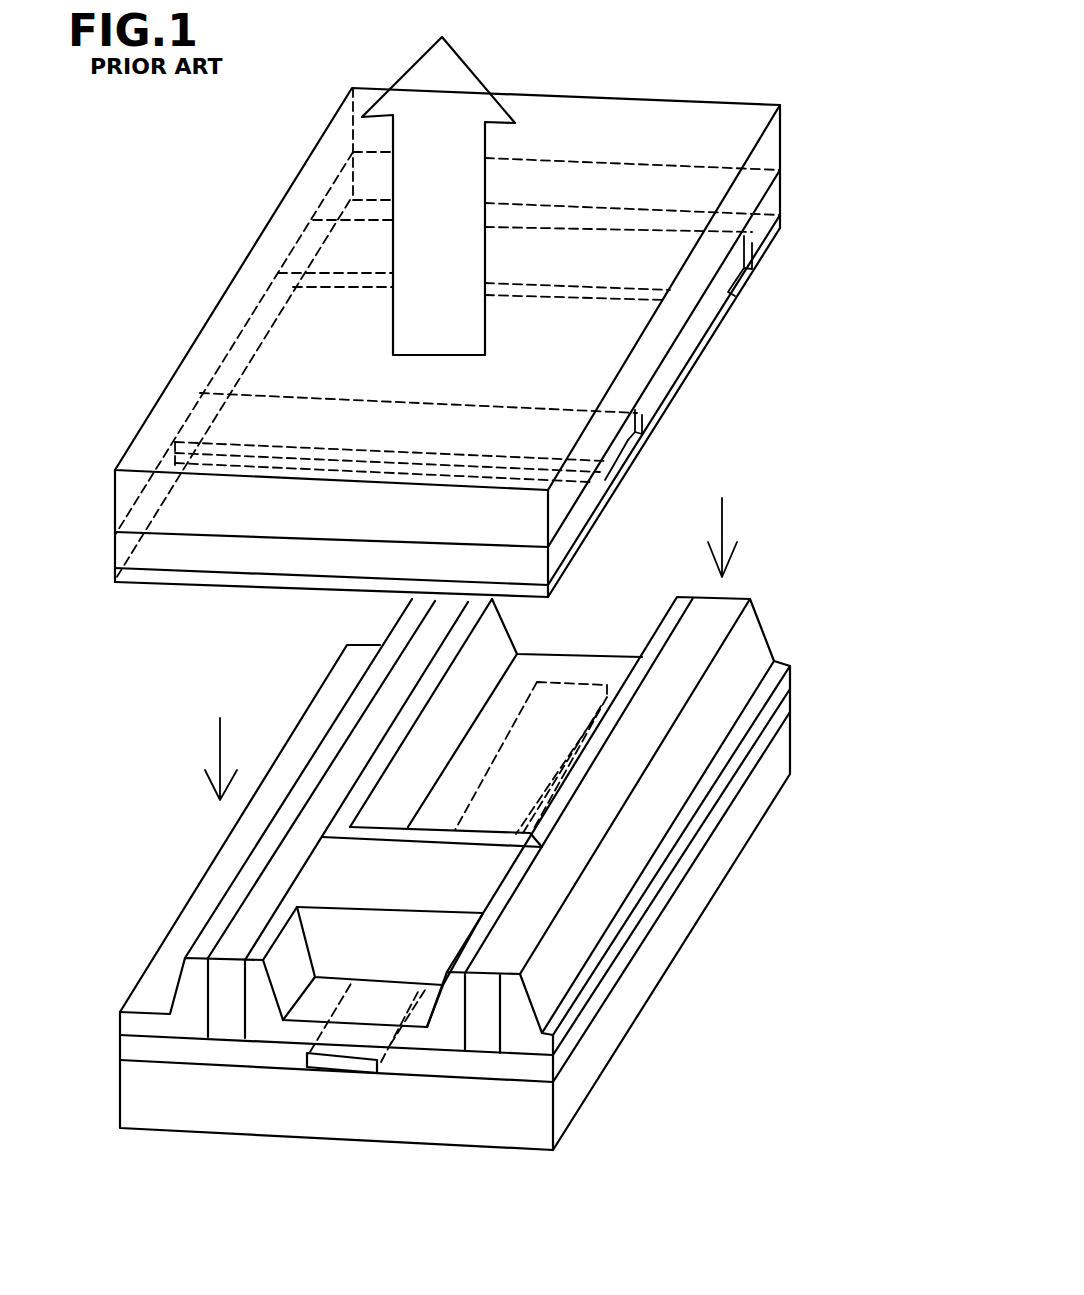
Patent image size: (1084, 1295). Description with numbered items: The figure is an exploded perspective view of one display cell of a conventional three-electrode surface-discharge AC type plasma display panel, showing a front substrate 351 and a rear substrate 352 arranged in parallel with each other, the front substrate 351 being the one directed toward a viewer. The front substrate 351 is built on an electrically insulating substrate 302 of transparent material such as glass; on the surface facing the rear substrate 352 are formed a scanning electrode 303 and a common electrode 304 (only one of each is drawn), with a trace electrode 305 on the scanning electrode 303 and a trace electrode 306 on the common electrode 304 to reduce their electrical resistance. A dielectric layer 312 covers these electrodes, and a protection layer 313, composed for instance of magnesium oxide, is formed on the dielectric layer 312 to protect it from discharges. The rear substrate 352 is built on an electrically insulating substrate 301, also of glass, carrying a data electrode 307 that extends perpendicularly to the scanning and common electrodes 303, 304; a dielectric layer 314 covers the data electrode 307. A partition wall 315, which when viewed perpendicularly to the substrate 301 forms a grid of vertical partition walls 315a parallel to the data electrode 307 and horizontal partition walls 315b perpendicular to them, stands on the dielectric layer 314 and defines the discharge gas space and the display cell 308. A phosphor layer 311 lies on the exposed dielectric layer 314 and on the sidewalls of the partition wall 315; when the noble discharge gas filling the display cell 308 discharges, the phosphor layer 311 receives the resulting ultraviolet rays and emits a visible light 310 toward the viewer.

The electrically insulating substrate 301 is at (500, 926).
The electrically insulating substrate 302 is at (770, 143).
The scanning electrode 303 is at (705, 284).
The common electrode 304 is at (630, 424).
The trace electrode 305 is at (746, 260).
The trace electrode 306 is at (605, 476).
The data electrode 307 is at (350, 1060).
The display cell 308 is at (510, 686).
The visible light 310 is at (455, 78).
The phosphor layer 311 is at (663, 625).
The dielectric layer 312 is at (773, 206).
The protection layer 313 is at (160, 582).
The dielectric layer 314 is at (215, 1048).
The partition wall 315 is at (694, 761).
The vertical partition wall 315a is at (745, 602).
The horizontal partition wall 315b is at (447, 862).
The front substrate 351 is at (525, 335).
The rear substrate 352 is at (508, 878).